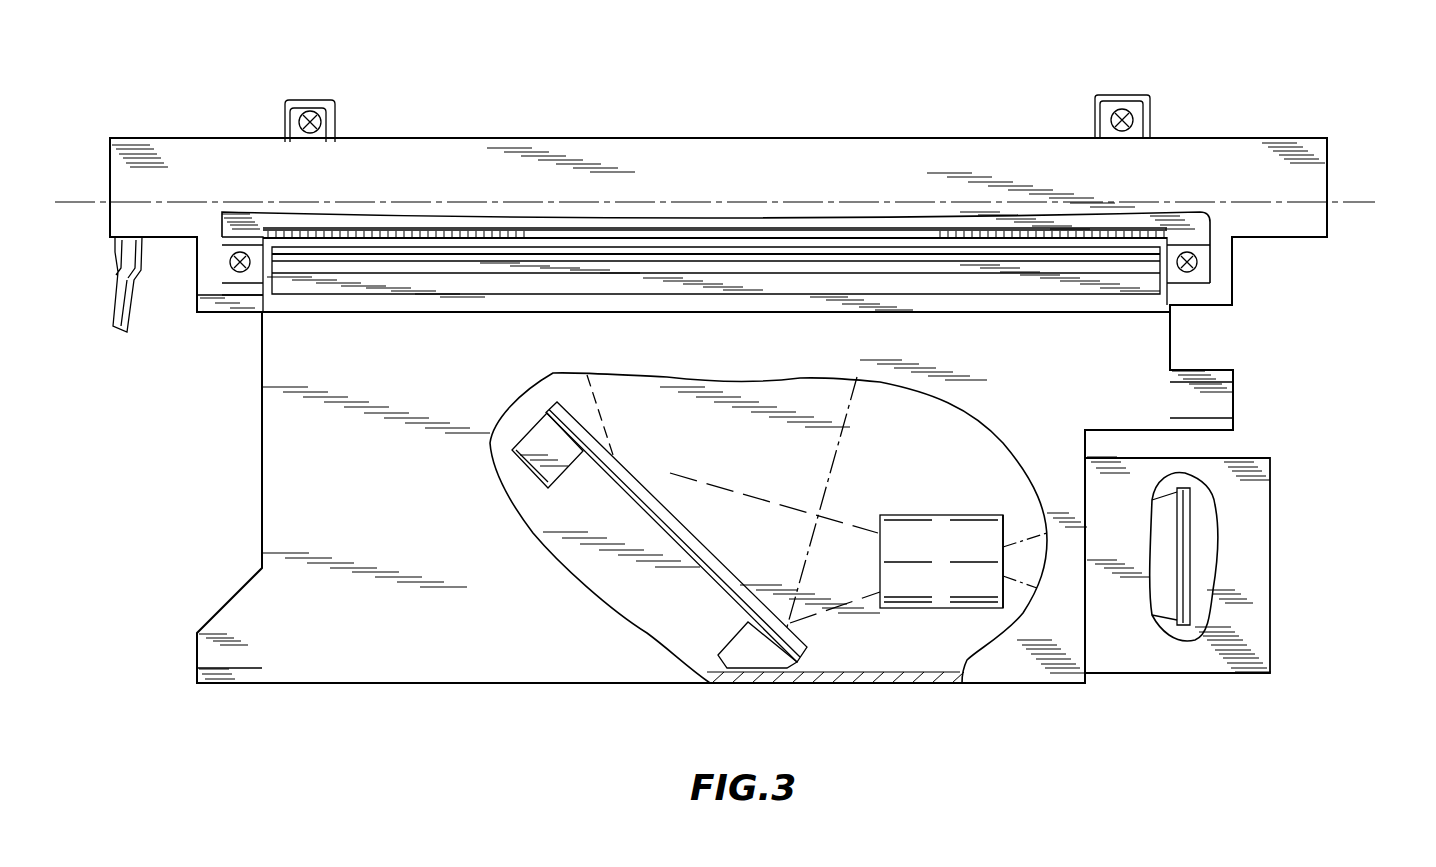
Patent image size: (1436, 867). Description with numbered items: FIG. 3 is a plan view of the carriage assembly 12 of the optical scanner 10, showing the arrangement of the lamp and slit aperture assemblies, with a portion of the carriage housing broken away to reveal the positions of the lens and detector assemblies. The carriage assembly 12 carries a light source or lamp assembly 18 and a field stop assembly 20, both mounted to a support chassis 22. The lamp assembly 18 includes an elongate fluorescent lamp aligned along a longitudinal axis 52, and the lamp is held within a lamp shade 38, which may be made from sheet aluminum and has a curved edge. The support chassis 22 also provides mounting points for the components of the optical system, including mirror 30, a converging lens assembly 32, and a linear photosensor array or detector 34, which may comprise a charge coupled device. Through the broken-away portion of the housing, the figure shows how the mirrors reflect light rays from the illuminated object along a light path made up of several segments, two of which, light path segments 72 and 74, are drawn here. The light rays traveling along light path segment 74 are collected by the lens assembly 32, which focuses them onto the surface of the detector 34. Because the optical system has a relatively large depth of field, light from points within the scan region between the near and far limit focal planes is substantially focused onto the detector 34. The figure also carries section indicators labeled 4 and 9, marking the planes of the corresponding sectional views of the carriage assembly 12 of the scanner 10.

The carriage assembly 12 is at (176, 96).
The lamp assembly 18 is at (1244, 136).
The field stop assembly 20 is at (1062, 297).
The support chassis 22 is at (1236, 408).
The mirror 30 is at (712, 553).
The lens assembly 32 is at (920, 610).
The detector 34 is at (1193, 568).
The lamp shade 38 is at (988, 140).
The longitudinal axis 52 is at (1372, 196).
The light path segment 72 is at (603, 418).
The light path segment 74 is at (733, 488).
The section line 4- 4 is at (795, 90).
The section line 9- 9 is at (644, 90).
The optical scanner 10 is at (237, 65).